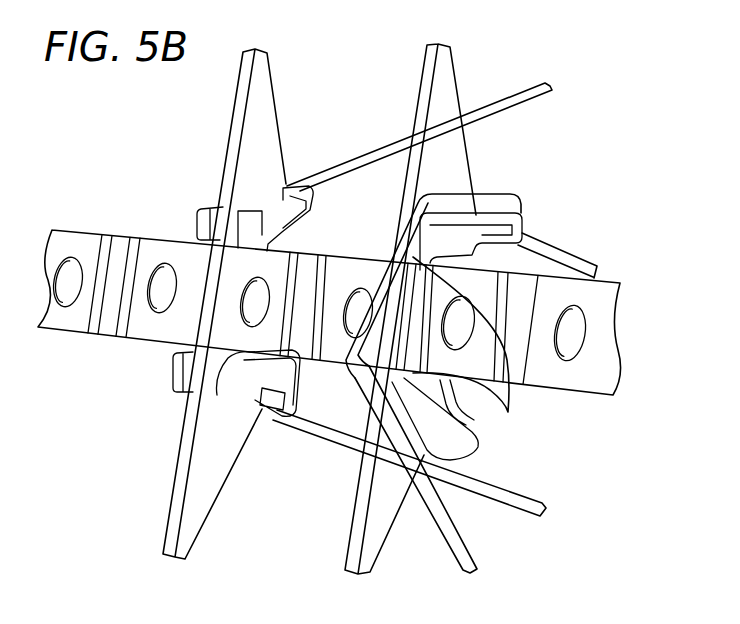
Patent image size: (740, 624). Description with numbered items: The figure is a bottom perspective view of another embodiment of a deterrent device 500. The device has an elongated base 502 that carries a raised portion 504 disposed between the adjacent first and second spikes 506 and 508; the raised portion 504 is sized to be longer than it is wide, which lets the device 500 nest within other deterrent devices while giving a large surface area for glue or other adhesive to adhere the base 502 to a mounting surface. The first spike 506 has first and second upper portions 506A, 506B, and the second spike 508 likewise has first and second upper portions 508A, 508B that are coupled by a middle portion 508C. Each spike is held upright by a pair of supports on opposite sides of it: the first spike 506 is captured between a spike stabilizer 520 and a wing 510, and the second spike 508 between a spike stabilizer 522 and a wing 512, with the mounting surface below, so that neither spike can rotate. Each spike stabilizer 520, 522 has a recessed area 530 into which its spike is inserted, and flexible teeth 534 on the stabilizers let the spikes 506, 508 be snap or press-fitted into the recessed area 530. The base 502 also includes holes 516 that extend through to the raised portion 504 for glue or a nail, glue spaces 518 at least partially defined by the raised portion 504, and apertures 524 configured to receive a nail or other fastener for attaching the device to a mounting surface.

The deterrent device 500 is at (612, 125).
The base 502 is at (68, 320).
The raised portion 504 is at (528, 337).
The first spike 506 is at (412, 290).
The first upper portion of first spike 506A is at (338, 164).
The second upper portion of first spike 506B is at (332, 437).
The second spike 508 is at (510, 394).
The first upper portion of second spike 508A is at (590, 259).
The second upper portion of second spike 508B is at (452, 538).
The middle portion of second spike 508C is at (393, 262).
The wing 510 is at (175, 507).
The wing 512 is at (348, 540).
The hole 516 is at (250, 293).
The glue space 518 is at (293, 350).
The spike stabilizer 520 is at (293, 192).
The spike stabilizer 522 is at (495, 233).
The aperture 524 is at (353, 293).
The recessed area 530 is at (387, 383).
The teeth 534 is at (473, 349).